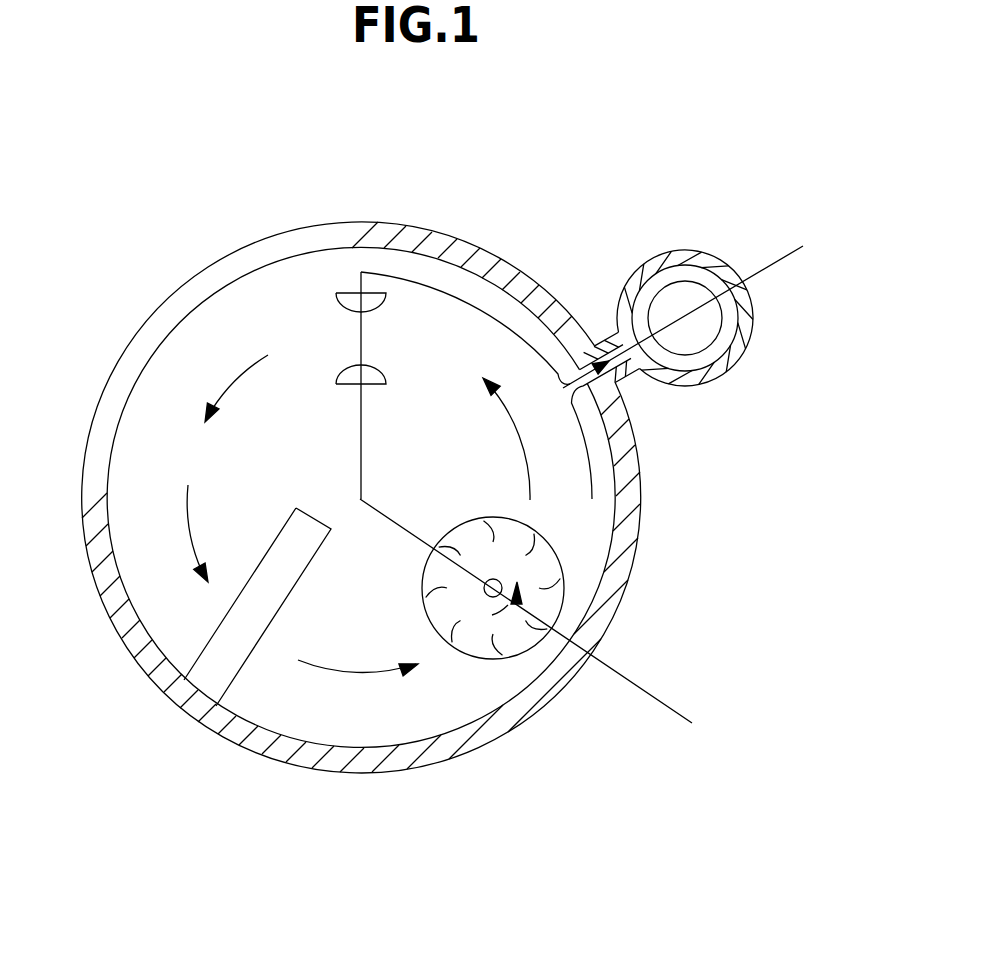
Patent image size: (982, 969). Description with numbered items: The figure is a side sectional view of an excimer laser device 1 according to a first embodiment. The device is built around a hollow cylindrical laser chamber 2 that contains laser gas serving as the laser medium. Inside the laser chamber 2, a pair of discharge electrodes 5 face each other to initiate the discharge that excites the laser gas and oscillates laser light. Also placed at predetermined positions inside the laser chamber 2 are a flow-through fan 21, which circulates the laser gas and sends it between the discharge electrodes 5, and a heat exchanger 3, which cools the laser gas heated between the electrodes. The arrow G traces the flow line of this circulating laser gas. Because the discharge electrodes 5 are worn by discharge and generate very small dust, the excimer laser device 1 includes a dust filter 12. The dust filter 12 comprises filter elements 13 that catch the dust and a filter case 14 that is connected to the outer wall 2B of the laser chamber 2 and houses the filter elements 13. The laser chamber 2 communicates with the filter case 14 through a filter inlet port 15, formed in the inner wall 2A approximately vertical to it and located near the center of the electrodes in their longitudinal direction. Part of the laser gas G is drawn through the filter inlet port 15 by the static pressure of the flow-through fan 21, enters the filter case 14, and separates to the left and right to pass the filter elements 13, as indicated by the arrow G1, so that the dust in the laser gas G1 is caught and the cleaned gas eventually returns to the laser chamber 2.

The excimer laser device 1 is at (637, 178).
The laser chamber 2 is at (450, 236).
The inner wall 2A is at (383, 254).
The outer wall 2B is at (637, 557).
The heat exchanger 3 is at (247, 667).
The discharge electrodes 5 is at (337, 373).
The dust filter 12 is at (693, 358).
The filter elements 13 is at (717, 352).
The filter case 14 is at (752, 318).
The filter inlet port 15 is at (563, 362).
The flow-through fan 21 is at (500, 658).
The laser gas flow G is at (188, 500).
The laser gas flow through filter G1 is at (590, 456).